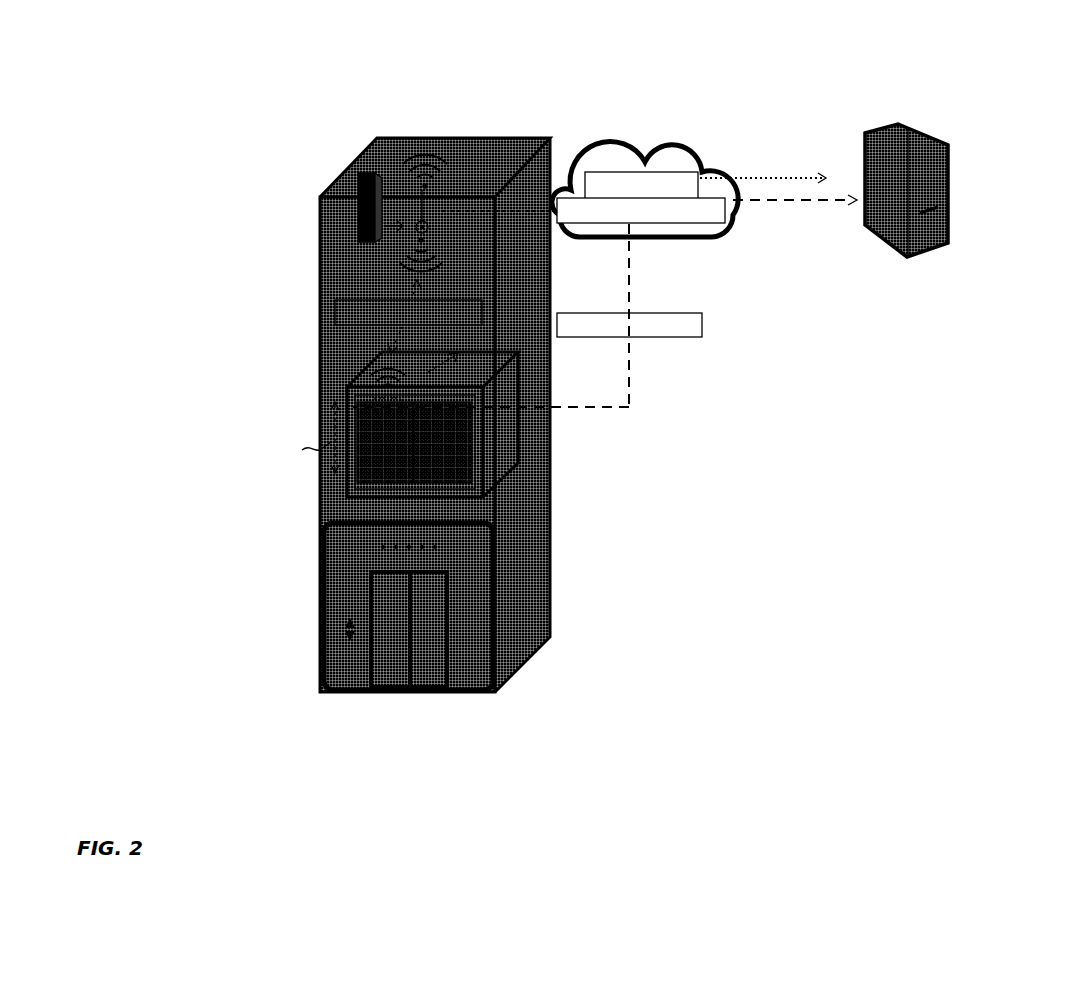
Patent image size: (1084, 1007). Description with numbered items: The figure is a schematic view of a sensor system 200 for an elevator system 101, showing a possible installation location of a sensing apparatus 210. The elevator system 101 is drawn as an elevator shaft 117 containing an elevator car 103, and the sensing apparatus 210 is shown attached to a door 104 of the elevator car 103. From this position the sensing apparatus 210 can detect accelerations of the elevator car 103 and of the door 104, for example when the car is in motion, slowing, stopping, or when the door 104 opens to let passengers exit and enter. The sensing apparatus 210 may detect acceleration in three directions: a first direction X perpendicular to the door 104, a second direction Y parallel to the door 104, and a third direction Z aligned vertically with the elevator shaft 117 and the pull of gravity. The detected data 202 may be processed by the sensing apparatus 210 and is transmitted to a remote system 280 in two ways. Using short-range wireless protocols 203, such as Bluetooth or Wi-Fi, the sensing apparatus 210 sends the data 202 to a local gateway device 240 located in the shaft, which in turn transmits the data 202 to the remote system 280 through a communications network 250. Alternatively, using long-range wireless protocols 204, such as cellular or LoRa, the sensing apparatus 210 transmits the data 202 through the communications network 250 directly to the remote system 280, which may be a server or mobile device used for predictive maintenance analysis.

The sensor system 200 is at (232, 104).
The elevator system 101 is at (276, 560).
The elevator shaft 117 is at (369, 228).
The local gateway device 240 is at (428, 228).
The data 202 is at (336, 306).
The short-range wireless protocols 203 is at (356, 338).
The long-range wireless protocols 204 is at (629, 390).
The elevator car 103 is at (347, 476).
The door 104 is at (347, 488).
The sensing apparatus 210 is at (346, 398).
The communications network 250 is at (613, 158).
The remote system 280 is at (957, 197).